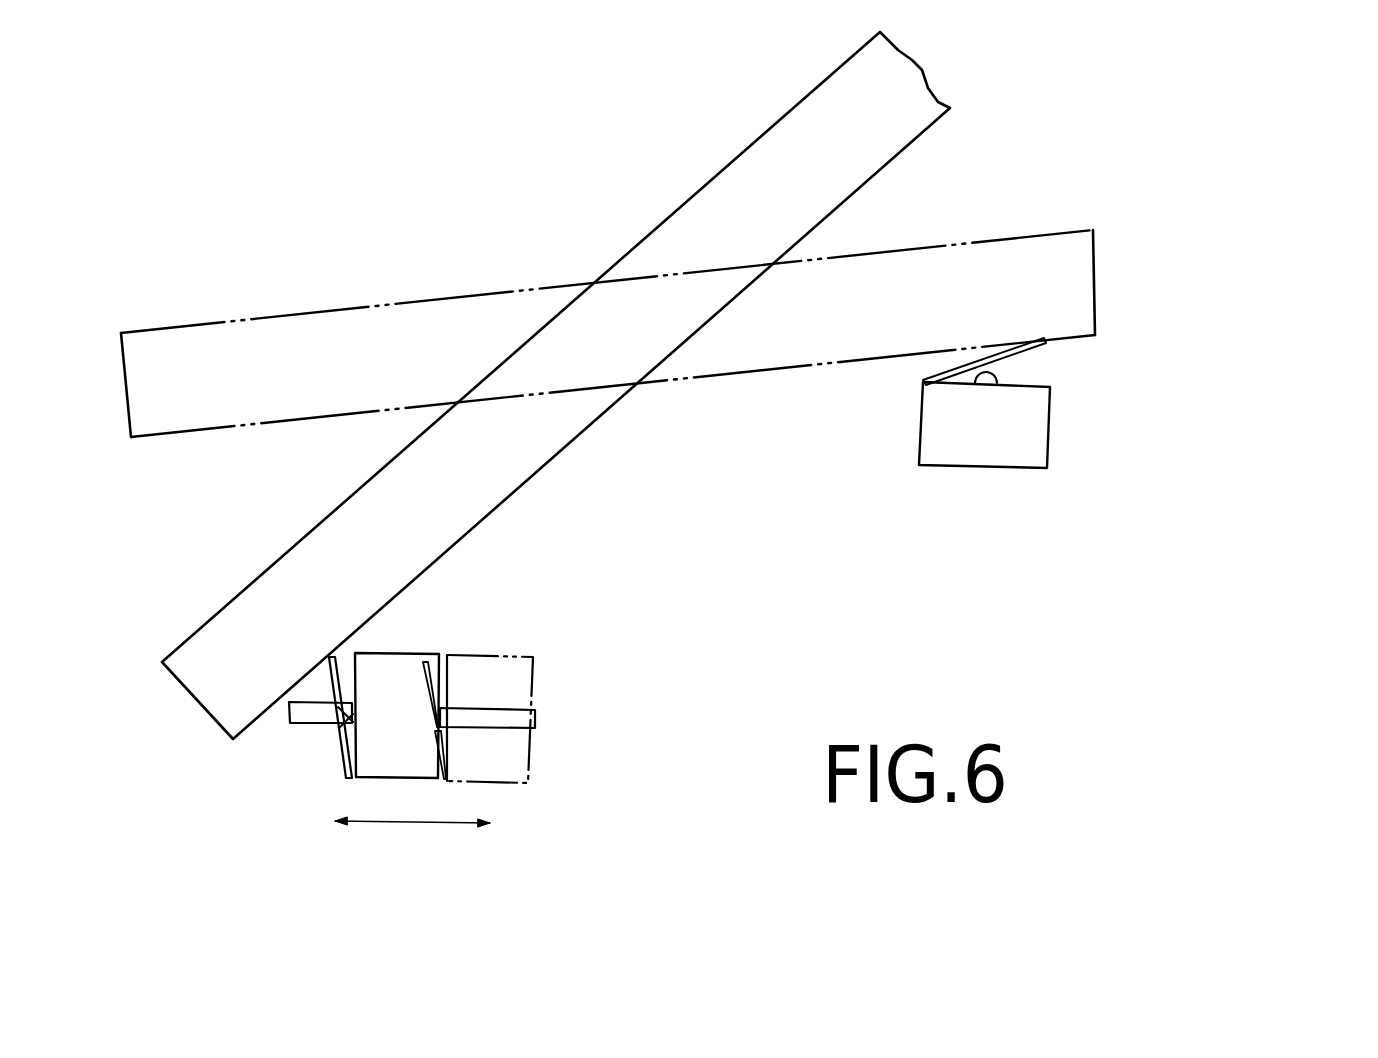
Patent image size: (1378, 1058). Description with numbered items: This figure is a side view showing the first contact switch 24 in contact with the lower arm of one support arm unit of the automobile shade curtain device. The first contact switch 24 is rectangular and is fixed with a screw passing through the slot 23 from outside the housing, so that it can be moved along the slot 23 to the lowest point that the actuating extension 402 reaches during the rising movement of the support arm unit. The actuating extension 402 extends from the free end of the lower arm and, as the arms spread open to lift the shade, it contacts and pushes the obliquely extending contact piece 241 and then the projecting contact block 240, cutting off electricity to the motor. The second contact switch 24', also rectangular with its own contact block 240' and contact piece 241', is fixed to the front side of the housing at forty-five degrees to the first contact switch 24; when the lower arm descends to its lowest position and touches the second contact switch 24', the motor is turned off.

The actuating extension 402 is at (1072, 267).
The first contact switch 24 is at (534, 687).
The slot 23 is at (298, 712).
The contact block 240 is at (360, 773).
The contact piece 241 is at (277, 793).
The second contact switch 24' is at (984, 477).
The contact block 240' is at (1164, 392).
The contact piece 241' is at (1135, 361).